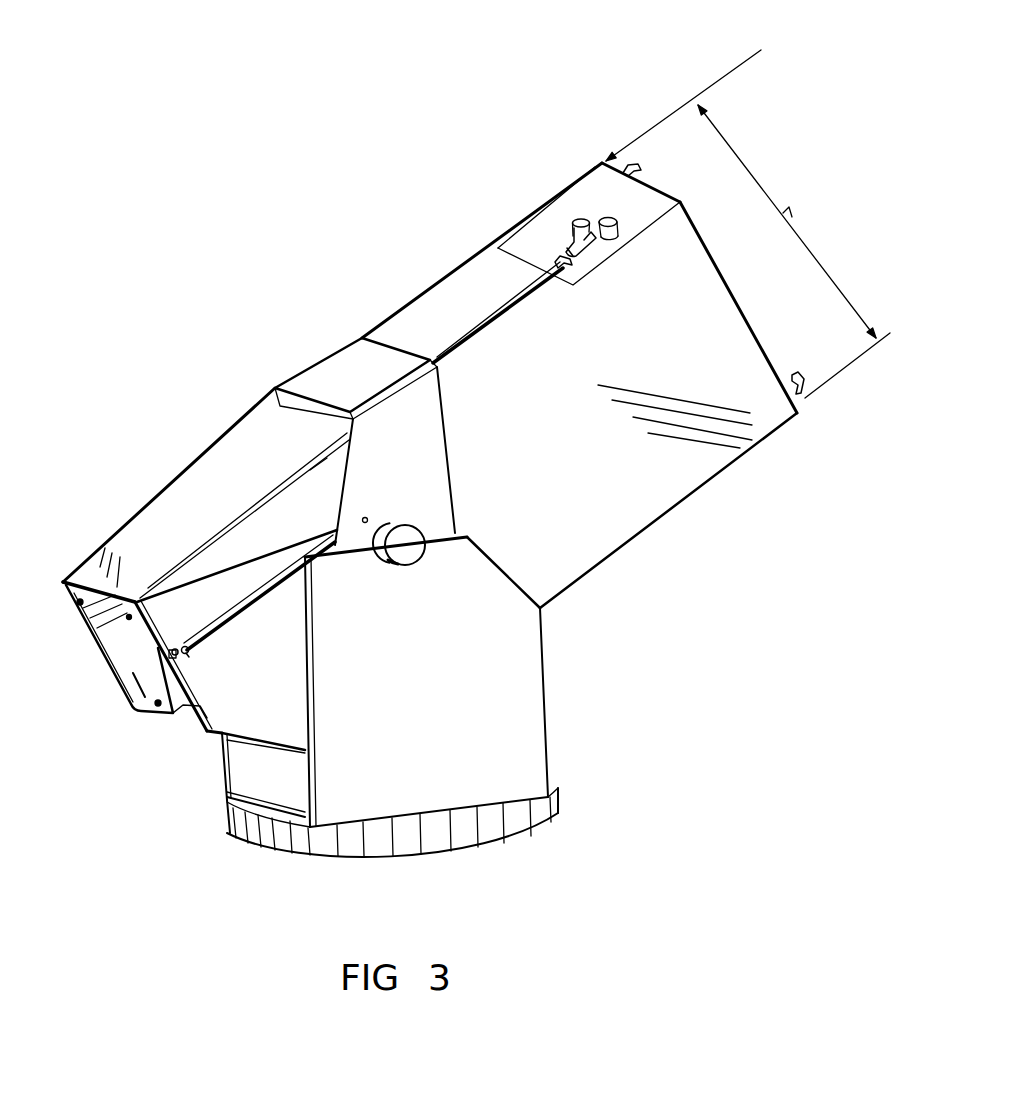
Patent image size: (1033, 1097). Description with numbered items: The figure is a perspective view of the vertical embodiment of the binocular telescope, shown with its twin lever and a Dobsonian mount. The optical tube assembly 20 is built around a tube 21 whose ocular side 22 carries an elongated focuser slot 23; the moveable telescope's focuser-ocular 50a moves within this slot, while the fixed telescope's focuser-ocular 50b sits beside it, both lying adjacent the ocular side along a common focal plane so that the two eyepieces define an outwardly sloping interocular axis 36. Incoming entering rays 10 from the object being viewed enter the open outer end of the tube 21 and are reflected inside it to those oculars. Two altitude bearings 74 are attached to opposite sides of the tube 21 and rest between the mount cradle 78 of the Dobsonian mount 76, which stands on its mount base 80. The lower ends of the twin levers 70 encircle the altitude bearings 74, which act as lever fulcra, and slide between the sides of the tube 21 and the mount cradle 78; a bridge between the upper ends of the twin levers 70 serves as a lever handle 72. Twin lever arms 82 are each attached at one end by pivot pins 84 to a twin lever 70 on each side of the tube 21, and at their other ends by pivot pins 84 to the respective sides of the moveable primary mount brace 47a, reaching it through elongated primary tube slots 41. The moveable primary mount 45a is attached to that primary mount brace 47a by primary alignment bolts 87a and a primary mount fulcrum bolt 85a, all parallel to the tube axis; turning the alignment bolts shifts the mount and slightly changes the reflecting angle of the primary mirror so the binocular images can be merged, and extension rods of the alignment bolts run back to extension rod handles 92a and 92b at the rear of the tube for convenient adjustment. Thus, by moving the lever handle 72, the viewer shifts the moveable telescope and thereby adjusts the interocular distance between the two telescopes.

The entering ray 10 is at (748, 224).
The optical tube assembly 20 is at (183, 475).
The tube 21 is at (227, 458).
The ocular side 22 is at (680, 200).
The elongated focuser slot 23 is at (572, 237).
The interocular axis 36 is at (585, 222).
The primary tube slots 41 is at (180, 643).
The primary mount 45a is at (133, 672).
The primary mount brace 47a is at (184, 712).
The focuser-ocular 50a is at (573, 223).
The focuser-ocular 50b is at (604, 220).
The twin lever 70 is at (452, 460).
The lever handle 72 is at (327, 380).
The altitude bearing 74 is at (388, 572).
The Dobsonian mount 76 is at (553, 698).
The mount cradle 78 is at (537, 755).
The mount base 80 is at (538, 820).
The twin lever arm 82 is at (252, 607).
The pivot pin 84 is at (367, 516).
The primary mount fulcrum bolt 85a is at (150, 713).
The primary alignment bolts 87a is at (126, 620).
The extension rod handle 92a is at (641, 168).
The extension rod handle 92b is at (803, 379).